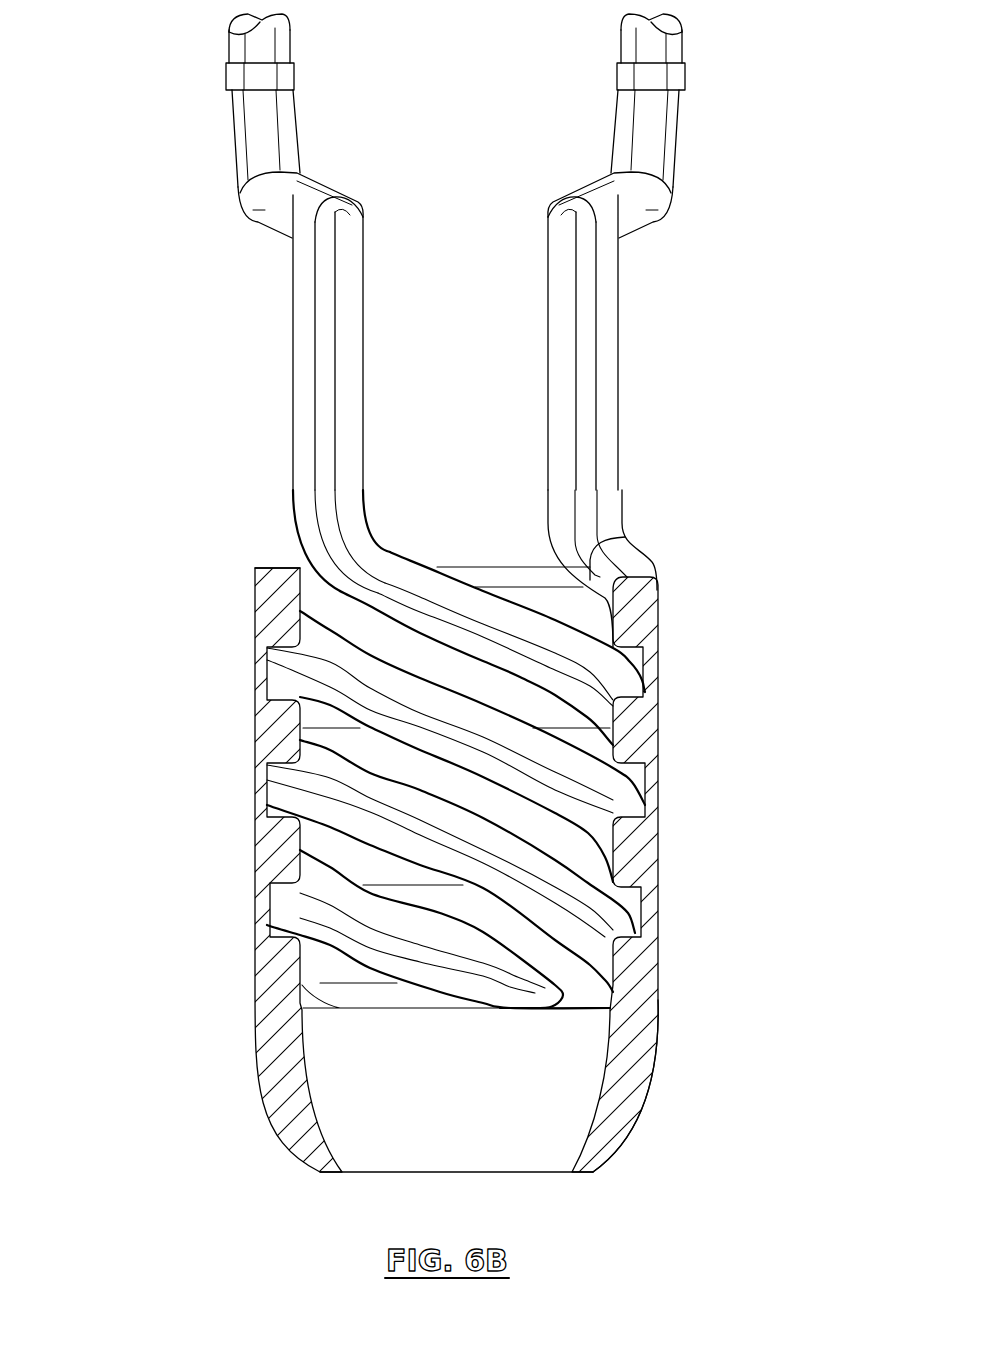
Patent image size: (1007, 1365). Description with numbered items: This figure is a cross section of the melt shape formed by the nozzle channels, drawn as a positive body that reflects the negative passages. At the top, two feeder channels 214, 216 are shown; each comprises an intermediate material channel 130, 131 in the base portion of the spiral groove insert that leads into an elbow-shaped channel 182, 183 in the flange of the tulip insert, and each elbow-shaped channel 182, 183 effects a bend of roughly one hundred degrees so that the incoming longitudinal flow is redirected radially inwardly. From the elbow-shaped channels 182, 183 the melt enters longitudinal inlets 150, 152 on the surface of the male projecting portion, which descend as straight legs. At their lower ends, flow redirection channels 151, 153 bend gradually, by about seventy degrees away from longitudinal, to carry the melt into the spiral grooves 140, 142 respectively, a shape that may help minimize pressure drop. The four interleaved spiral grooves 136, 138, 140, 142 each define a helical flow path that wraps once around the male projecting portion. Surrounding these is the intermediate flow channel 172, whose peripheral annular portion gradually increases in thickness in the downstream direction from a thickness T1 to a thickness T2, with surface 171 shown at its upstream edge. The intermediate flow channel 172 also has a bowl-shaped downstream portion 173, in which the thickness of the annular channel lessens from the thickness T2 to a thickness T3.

The intermediate material channel 130 is at (250, 46).
The intermediate material channel 131 is at (640, 46).
The feeder channel 214 is at (368, 142).
The feeder channel 216 is at (562, 138).
The elbow-shaped channel 182 is at (262, 210).
The elbow-shaped channel 183 is at (662, 153).
The longitudinal inlet 150 is at (305, 407).
The longitudinal inlet 152 is at (595, 357).
The flow redirection channel 151 is at (388, 515).
The flow redirection channel 153 is at (640, 503).
The top surface of housing 171 is at (258, 548).
The intermediate flow channel 172 is at (185, 800).
The downstream portion 173 is at (665, 1097).
The spiral groove 140 is at (475, 625).
The spiral groove 138 is at (475, 743).
The spiral groove 136 is at (475, 863).
The spiral groove 142 is at (475, 983).
The thickness T1 is at (643, 665).
The thickness T2 is at (610, 995).
The thickness T3 is at (568, 1156).